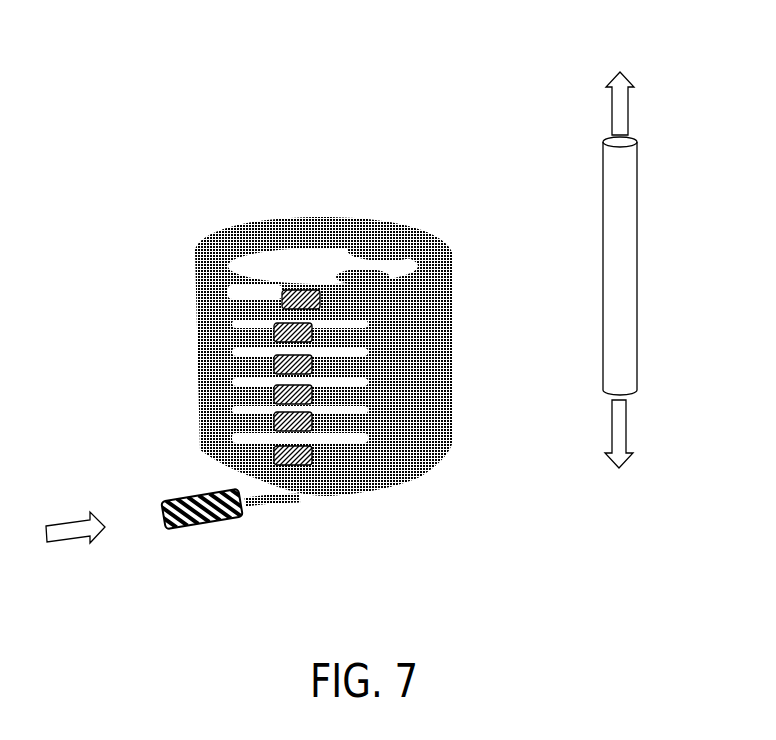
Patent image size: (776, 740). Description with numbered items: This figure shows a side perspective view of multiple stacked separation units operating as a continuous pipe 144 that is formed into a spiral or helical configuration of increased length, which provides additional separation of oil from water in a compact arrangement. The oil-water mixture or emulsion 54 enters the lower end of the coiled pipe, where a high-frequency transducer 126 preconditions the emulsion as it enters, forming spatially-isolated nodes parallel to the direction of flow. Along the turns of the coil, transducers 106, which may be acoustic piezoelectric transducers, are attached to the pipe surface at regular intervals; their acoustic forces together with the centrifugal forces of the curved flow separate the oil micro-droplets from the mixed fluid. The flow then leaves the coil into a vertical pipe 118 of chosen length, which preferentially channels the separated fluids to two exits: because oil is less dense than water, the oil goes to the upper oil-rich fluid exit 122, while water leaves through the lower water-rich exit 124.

The oil-water mixture or emulsion 54 is at (53, 523).
The transducers 106 is at (291, 285).
The vertical pipe 118 is at (637, 263).
The upper oil-rich fluid exit 122 is at (607, 103).
The lower water-rich exit 124 is at (608, 433).
The high-frequency transducer 126 is at (215, 527).
The continuous pipe 144 is at (190, 334).